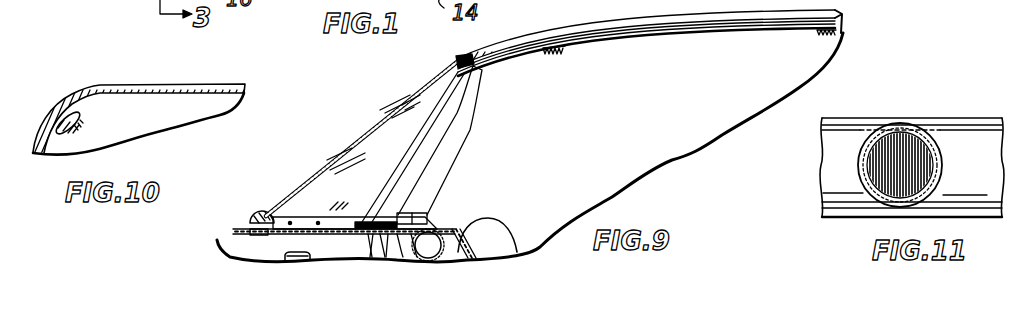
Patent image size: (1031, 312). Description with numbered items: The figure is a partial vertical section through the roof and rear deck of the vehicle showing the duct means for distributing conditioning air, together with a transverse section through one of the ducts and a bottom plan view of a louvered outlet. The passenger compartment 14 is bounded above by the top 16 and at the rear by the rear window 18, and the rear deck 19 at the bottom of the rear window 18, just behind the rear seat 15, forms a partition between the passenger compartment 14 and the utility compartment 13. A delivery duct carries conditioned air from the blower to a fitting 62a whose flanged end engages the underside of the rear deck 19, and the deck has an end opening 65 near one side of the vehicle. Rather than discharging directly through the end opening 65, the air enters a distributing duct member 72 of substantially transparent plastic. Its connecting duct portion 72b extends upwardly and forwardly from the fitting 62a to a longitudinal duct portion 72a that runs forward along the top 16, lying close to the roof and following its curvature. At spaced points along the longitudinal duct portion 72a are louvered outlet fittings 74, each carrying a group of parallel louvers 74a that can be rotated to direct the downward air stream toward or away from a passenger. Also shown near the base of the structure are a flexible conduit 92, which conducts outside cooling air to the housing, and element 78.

In FIG. 9, the utility compartment 13 is at (230, 240).
In FIG. 9, the passenger compartment 14 is at (660, 142).
In FIG. 9, the rear seat 15 is at (500, 233).
In FIG. 10, the top 16 is at (209, 84).
In FIG. 9, the top 16 is at (667, 31).
In FIG. 9, the rear window 18 is at (369, 122).
In FIG. 9, the rear deck 19 is at (322, 209).
In FIG. 9, the fitting 62a is at (373, 253).
In FIG. 9, the end opening 65 is at (378, 221).
In FIG. 9, the distributing duct member 72 is at (612, 36).
In FIG. 11, the distributing duct member 72 is at (855, 119).
In FIG. 9, the longitudinal duct portion 72a is at (720, 30).
In FIG. 11, the longitudinal duct portion 72a is at (867, 125).
In FIG. 9, the connecting duct portion 72b is at (443, 128).
In FIG. 10, the louvered outlet fitting 74 is at (82, 120).
In FIG. 9, the louvered outlet fitting 74 is at (540, 52).
In FIG. 11, the louvered outlet fitting 74 is at (913, 133).
In FIG. 11, the louvers 74a is at (932, 163).
In FIG. 9, the roller 78 is at (450, 230).
In FIG. 9, the flexible conduit 92 is at (287, 253).